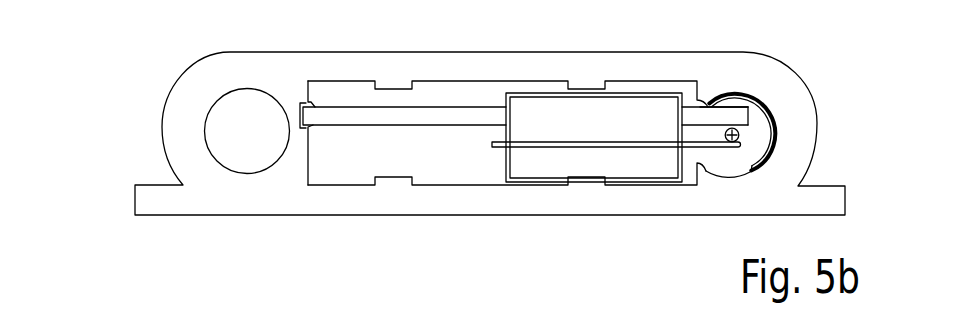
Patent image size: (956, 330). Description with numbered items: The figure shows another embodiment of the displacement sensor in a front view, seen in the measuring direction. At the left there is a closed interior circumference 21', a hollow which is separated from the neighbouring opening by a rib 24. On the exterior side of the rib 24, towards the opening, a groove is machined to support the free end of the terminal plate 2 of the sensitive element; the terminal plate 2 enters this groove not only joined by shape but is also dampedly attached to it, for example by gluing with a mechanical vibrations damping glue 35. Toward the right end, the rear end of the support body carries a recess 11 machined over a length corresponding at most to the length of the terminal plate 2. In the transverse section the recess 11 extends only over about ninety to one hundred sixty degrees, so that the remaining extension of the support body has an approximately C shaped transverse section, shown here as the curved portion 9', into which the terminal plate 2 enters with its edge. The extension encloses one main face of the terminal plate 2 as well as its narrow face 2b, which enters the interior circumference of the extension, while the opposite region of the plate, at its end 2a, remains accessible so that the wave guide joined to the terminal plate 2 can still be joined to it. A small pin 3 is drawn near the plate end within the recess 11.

The terminal plate 2 is at (403, 120).
The upper edge of rod end 2a is at (737, 107).
The narrow face 2b is at (748, 117).
The pivot pin 3 is at (739, 136).
The bearing shell 9' is at (775, 104).
The recess 11 is at (732, 160).
The interior circumference 21' is at (247, 131).
The rib 24 is at (490, 124).
The mechanical vibrations damping glue 35 is at (312, 127).